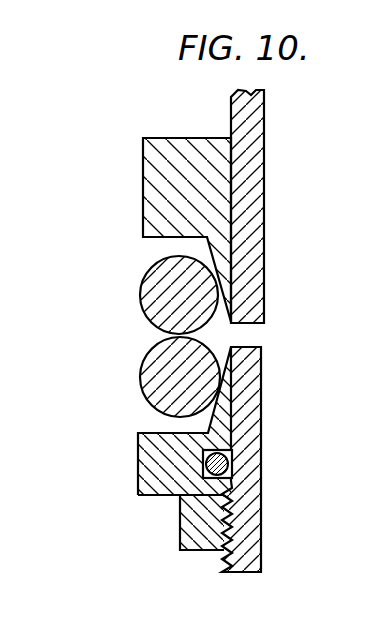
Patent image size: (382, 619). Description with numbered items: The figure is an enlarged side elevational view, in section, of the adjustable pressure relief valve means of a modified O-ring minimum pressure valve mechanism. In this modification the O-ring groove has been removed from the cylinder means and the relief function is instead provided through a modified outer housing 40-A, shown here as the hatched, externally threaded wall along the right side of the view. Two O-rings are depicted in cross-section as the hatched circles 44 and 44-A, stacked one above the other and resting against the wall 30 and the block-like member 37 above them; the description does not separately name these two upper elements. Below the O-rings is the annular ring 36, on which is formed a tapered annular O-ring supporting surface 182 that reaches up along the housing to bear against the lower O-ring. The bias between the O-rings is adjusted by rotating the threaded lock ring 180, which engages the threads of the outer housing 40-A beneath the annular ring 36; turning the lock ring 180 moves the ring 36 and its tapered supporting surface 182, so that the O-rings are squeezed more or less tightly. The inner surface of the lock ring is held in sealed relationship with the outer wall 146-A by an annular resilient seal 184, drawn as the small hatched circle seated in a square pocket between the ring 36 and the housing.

The upper wall 30 is at (240, 332).
The outer wall 146-A is at (257, 256).
The upper block 37 is at (150, 180).
The ball 44 is at (148, 276).
The ball 44-A is at (150, 357).
The modified outer housing 40-A is at (262, 408).
The annular ring 36 is at (146, 460).
The tapered annular O-ring supporting surface 182 is at (207, 427).
The threaded lock ring 180 is at (188, 526).
The annular resilient seal 184 is at (233, 462).